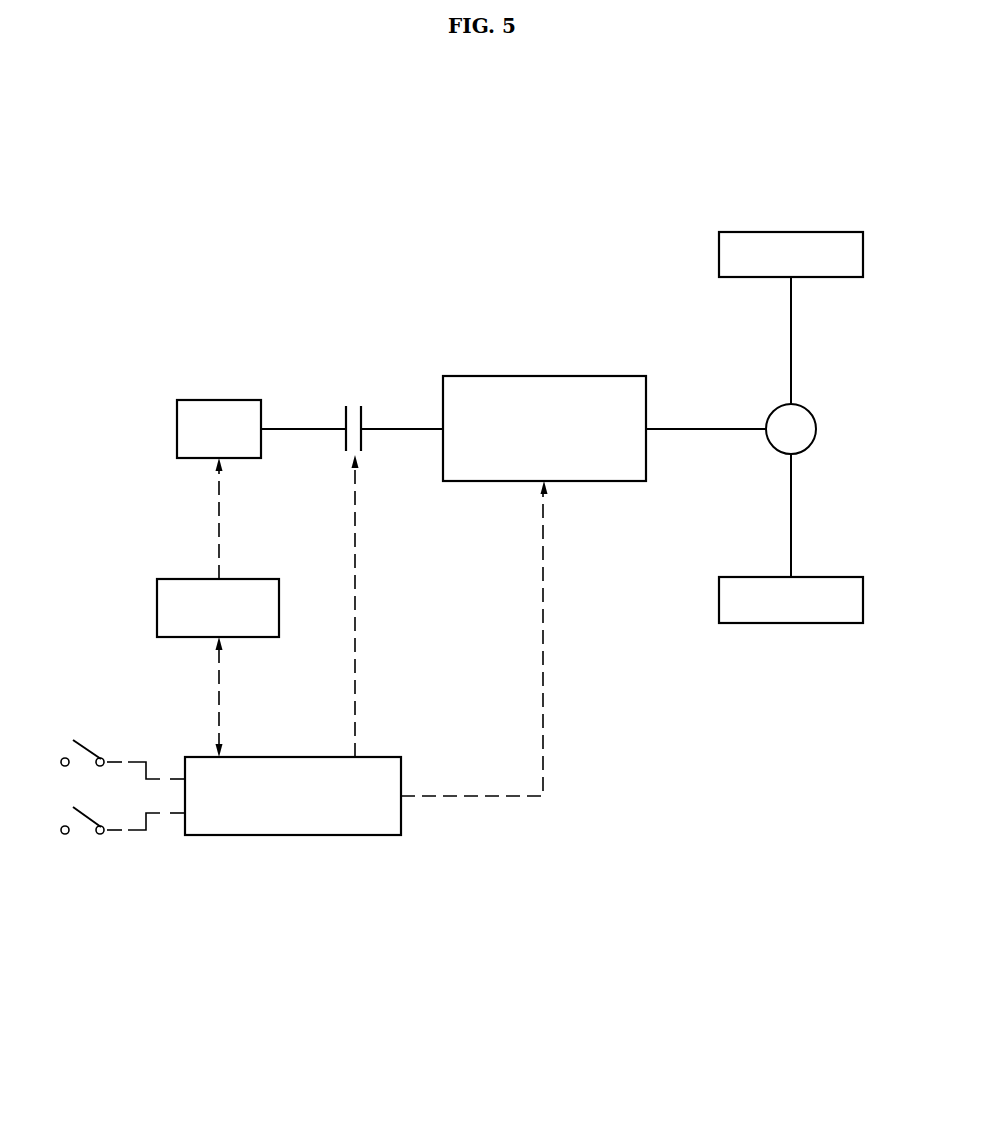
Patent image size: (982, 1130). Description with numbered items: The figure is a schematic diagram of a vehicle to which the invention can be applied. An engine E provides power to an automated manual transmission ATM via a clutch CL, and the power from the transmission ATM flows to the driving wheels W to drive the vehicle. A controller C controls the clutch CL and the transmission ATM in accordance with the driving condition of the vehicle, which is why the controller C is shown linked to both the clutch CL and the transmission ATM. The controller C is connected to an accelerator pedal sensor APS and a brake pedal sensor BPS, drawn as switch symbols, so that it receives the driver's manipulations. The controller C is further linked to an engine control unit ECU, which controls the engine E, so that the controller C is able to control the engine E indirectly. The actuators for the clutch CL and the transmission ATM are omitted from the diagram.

The engine E is at (219, 429).
The clutch CL is at (355, 400).
The automated manual transmission ATM is at (544, 428).
The driving wheels W is at (795, 237).
The engine control unit ECU is at (218, 608).
The controller C is at (311, 836).
The accelerator pedal sensor APS is at (100, 757).
The brake pedal sensor BPS is at (100, 836).